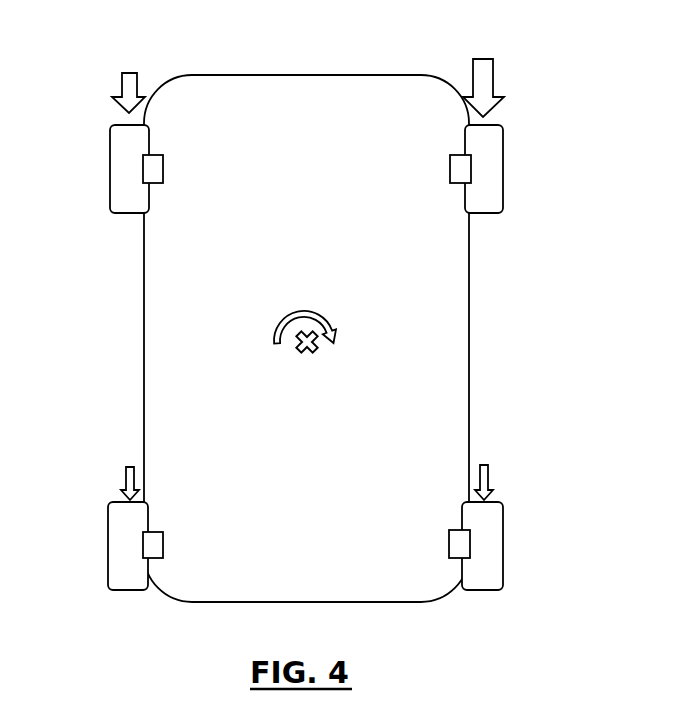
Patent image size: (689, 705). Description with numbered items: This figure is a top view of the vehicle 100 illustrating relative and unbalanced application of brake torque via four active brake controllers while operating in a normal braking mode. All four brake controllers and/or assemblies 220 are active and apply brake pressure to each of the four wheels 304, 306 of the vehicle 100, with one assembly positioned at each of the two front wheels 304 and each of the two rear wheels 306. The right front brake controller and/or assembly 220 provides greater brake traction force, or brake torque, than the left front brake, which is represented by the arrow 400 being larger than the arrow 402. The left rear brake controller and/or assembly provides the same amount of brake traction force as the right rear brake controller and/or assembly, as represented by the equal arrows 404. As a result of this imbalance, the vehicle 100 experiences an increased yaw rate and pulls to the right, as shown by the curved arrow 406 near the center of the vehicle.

The vehicle 100 is at (455, 302).
The brake controller and/or assembly 220 is at (143, 177).
The front wheel 304 is at (110, 168).
The rear wheel 306 is at (108, 538).
The arrow representing right front brake traction force 400 is at (495, 80).
The arrow representing left front brake traction force 402 is at (118, 77).
The arrows representing rear brake traction forces 404 is at (127, 483).
The arrow representing yaw rate 406 is at (334, 328).